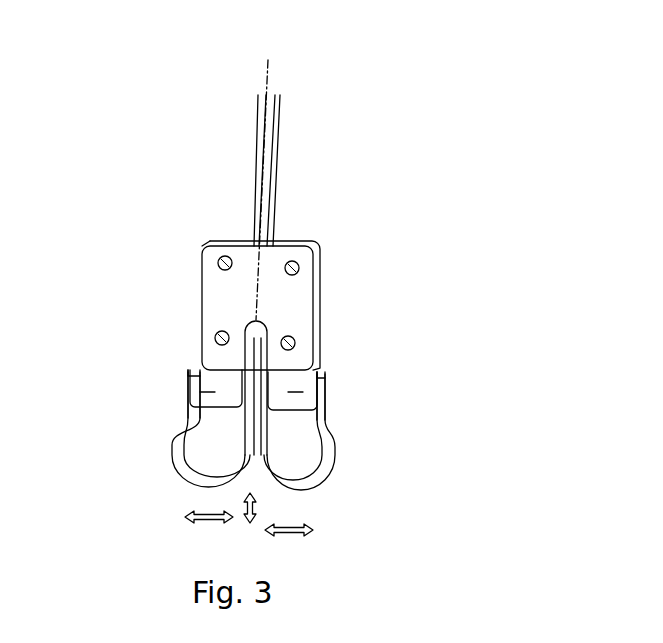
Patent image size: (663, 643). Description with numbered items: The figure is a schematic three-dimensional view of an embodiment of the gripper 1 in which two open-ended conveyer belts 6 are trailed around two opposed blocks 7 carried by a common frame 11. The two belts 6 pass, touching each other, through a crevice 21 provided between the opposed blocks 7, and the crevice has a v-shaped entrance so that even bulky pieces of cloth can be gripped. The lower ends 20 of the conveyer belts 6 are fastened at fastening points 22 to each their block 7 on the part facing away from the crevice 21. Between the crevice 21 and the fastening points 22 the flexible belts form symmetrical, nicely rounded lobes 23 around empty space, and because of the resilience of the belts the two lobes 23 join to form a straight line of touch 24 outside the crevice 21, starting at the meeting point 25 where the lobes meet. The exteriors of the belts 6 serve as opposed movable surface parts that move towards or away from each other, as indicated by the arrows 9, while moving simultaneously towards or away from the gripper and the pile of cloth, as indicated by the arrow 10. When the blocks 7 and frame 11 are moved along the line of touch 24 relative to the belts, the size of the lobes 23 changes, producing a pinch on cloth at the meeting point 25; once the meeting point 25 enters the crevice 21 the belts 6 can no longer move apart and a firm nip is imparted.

The fastening device 1 is at (327, 204).
The conveyer belts 6 is at (252, 220).
The opposed blocks 7 is at (215, 387).
The arrows 9 is at (187, 523).
The arrow 10 is at (240, 521).
The common frame 11 is at (307, 307).
The lower ends 20 is at (193, 385).
The crevice 21 is at (207, 333).
The fastening points 22 is at (197, 393).
The lobes 23 is at (188, 490).
The line of touch 24 is at (268, 86).
The meeting point 25 is at (250, 475).